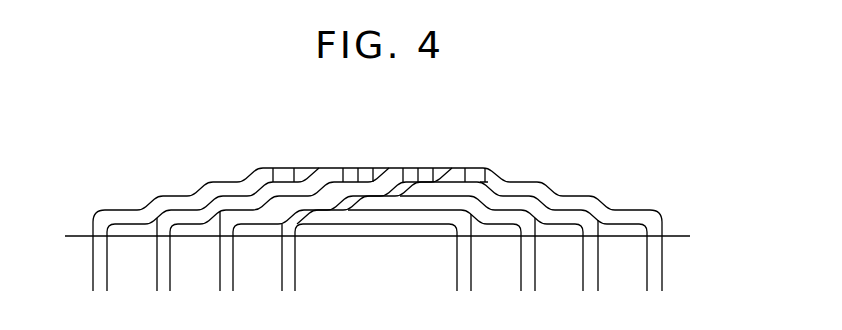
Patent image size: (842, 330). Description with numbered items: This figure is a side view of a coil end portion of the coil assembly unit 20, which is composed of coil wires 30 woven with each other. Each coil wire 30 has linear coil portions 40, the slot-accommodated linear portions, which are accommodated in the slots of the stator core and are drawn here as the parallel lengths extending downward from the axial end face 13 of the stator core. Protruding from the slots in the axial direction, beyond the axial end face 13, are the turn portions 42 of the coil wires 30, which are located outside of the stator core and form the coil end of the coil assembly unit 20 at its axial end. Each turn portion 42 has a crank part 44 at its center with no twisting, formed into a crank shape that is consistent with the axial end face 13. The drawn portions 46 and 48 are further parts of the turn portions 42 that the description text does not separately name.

The axial end face 13 is at (80, 234).
The coil assembly unit 20 is at (404, 150).
The coil wires 30 is at (609, 149).
The linear coil portions 40 is at (663, 268).
The turn portions 42 is at (396, 204).
The crank part 44 is at (478, 167).
The bent portion 46 is at (634, 211).
The step portion 48 is at (576, 198).